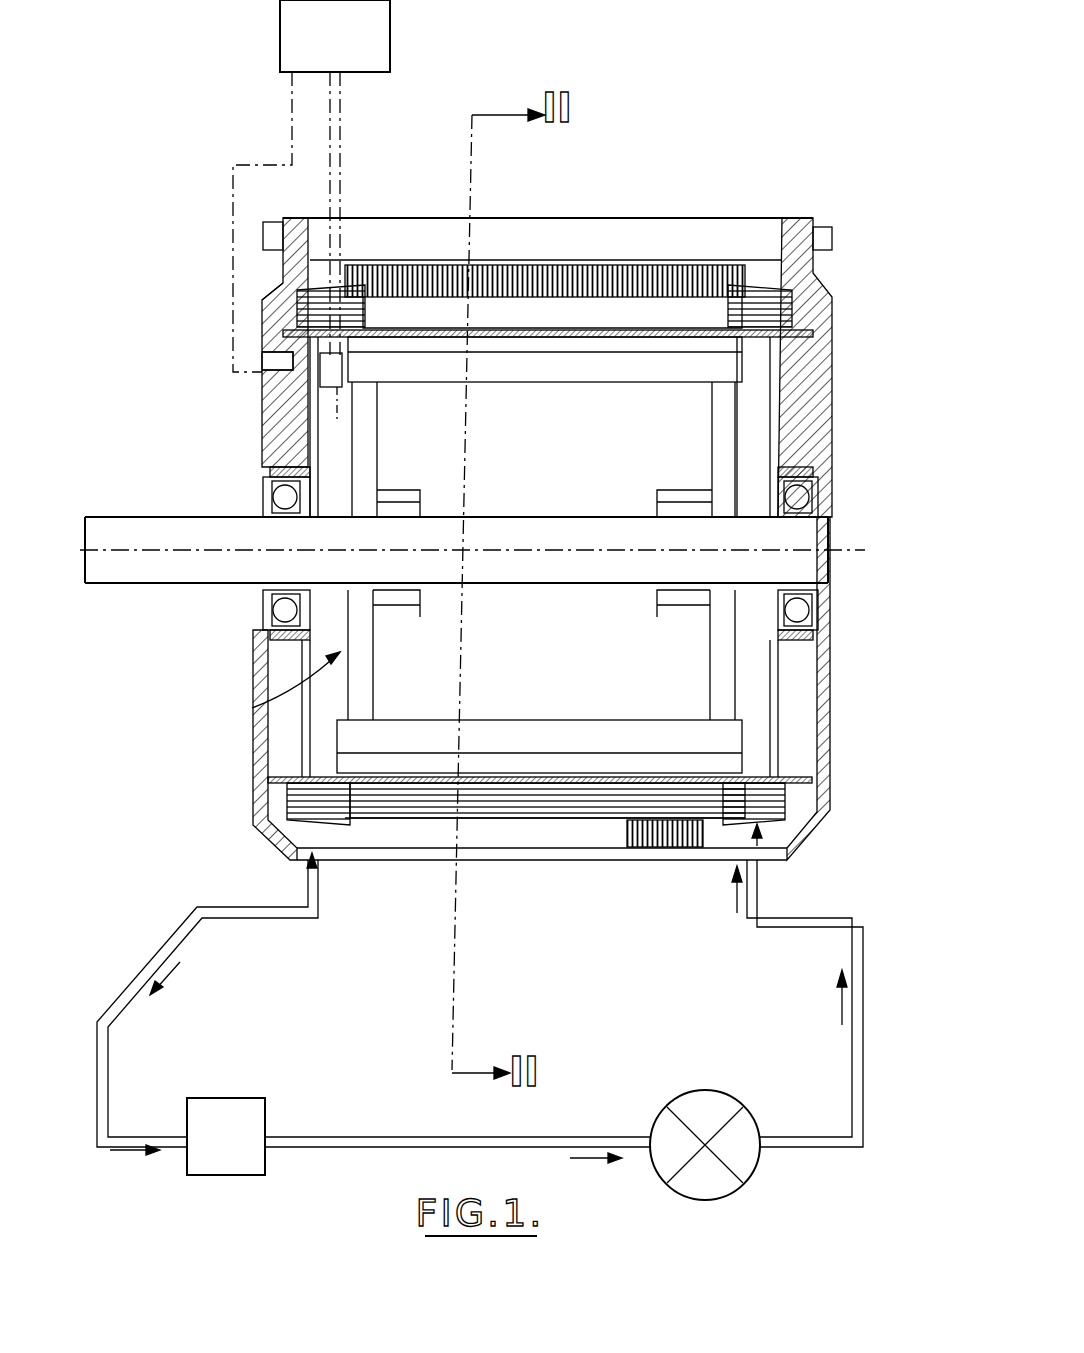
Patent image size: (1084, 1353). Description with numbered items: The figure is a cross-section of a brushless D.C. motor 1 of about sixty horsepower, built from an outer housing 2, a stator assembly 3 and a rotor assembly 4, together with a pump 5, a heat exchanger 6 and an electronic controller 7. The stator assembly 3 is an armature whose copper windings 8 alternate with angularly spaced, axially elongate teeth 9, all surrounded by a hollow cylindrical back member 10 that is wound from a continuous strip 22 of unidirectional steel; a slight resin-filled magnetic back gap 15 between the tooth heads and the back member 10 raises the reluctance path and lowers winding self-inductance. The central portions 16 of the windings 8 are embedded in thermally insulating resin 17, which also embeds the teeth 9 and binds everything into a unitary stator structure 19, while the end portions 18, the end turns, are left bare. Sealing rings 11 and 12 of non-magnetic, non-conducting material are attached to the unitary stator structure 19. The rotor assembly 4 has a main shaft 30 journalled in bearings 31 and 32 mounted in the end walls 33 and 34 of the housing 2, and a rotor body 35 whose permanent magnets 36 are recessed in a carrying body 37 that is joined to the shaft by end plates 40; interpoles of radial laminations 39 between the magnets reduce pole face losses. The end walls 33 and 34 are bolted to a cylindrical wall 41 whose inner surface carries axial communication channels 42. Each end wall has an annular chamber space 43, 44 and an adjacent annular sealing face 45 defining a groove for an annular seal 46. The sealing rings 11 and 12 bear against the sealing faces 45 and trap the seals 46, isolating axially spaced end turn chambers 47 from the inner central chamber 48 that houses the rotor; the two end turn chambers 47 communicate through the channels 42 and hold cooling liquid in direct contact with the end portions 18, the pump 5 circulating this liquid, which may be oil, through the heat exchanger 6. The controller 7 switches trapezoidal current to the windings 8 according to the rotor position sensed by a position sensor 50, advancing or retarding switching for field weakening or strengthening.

The brushless D.C. motor 1 is at (240, 430).
The outer housing 2 is at (840, 355).
The stator assembly 3 is at (625, 270).
The rotor assembly 4 is at (565, 358).
The pump 5 is at (735, 1160).
The heat exchanger 6 is at (210, 1152).
The electronic controller 7 is at (318, 50).
The windings 8 is at (752, 325).
The teeth 9 is at (400, 310).
The back member 10 is at (525, 262).
The sealing ring 11 is at (290, 293).
The sealing ring 12 is at (757, 340).
The magnetic back gap 15 is at (700, 265).
The central portions 16 is at (513, 790).
The resin 17 is at (432, 790).
The end portions 18 is at (795, 800).
The unitary stator structure 19 is at (440, 265).
The continuous strip 22 is at (418, 270).
The main shaft 30 is at (505, 555).
The bearing 31 is at (262, 500).
The bearing 32 is at (800, 510).
The end wall 33 is at (262, 395).
The end wall 34 is at (820, 640).
The rotor body 35 is at (360, 675).
The permanent magnets 36 is at (548, 300).
The carrying body 37 is at (618, 370).
The radial laminations 39 is at (508, 720).
The end plates 40 is at (300, 735).
The cylindrical wall 41 is at (490, 222).
The communication channels 42 is at (605, 323).
The annular chamber space 43 is at (270, 825).
The annular chamber space 44 is at (820, 335).
The annular sealing face 45 is at (275, 350).
The annular seal 46 is at (287, 760).
The end turn chambers 47 is at (800, 300).
The central chamber 48 is at (790, 440).
The position sensor 50 is at (338, 392).